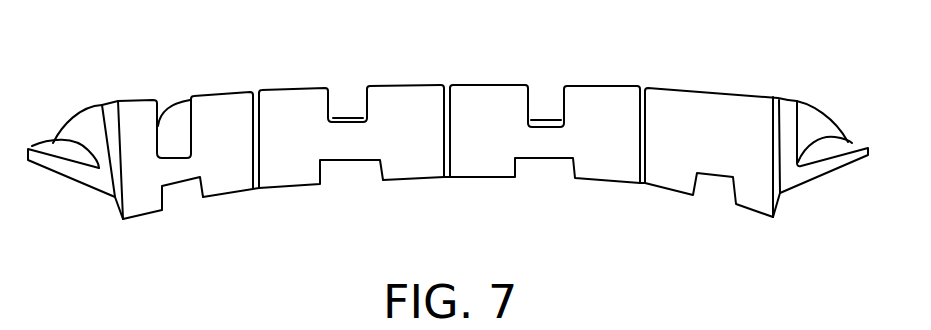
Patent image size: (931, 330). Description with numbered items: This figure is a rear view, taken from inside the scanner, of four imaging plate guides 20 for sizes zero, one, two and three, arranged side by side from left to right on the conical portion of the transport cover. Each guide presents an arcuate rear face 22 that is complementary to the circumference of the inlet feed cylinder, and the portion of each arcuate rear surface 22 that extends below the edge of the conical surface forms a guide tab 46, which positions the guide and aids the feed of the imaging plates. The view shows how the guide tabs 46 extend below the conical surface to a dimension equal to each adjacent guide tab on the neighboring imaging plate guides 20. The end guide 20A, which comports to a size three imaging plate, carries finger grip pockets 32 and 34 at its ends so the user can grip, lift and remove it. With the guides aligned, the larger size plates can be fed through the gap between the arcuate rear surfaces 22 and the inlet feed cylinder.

The imaging plate guide 20 is at (218, 93).
The imaging plate guide 20A is at (707, 90).
The arcuate rear face 22 is at (207, 155).
The guide tab 46 is at (133, 222).
The finger grip pocket 34 is at (67, 148).
The finger grip pocket 32 is at (830, 143).